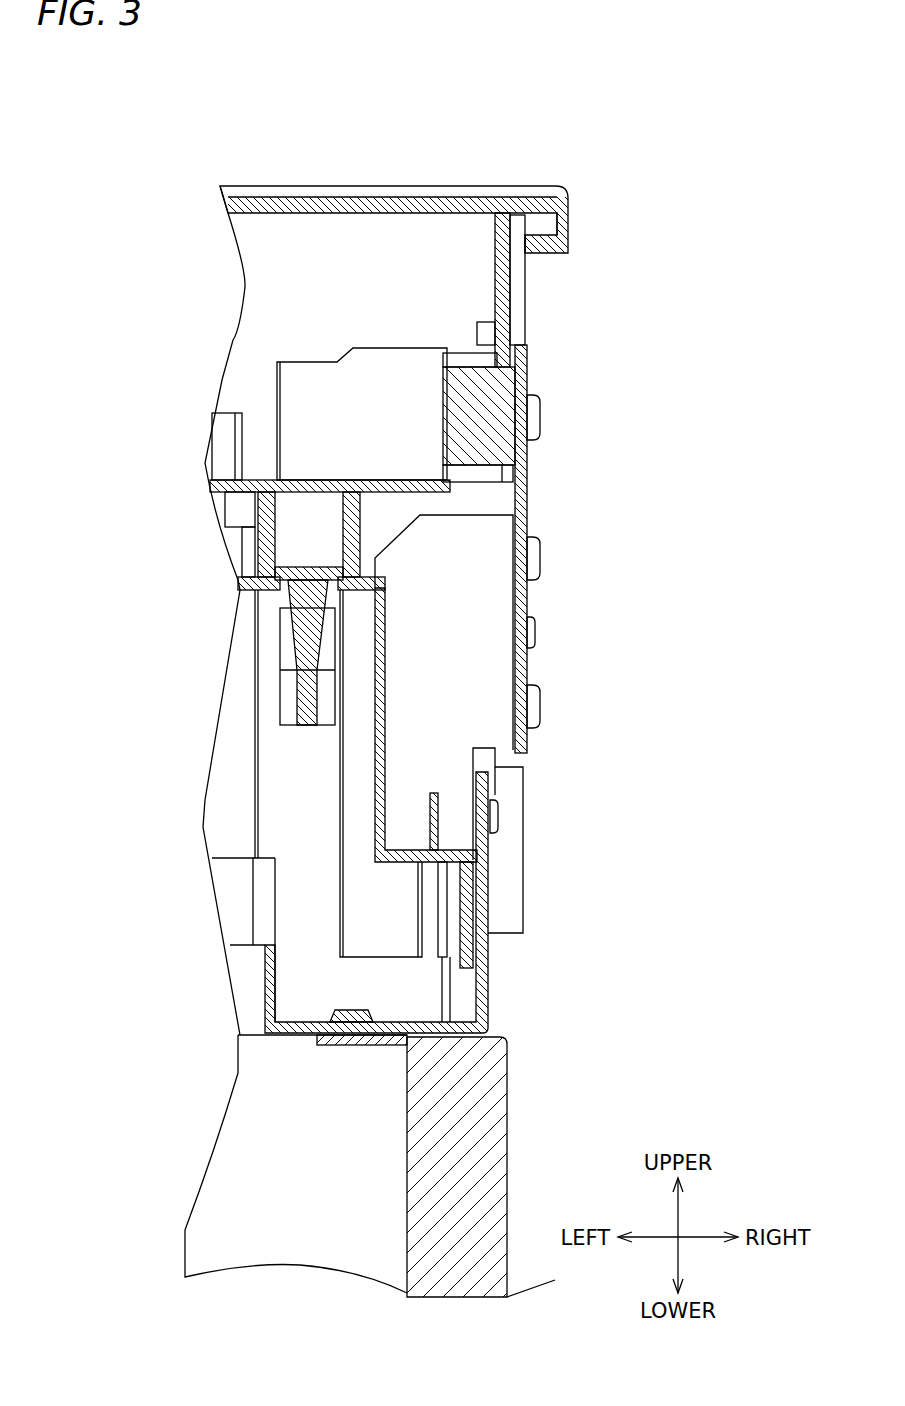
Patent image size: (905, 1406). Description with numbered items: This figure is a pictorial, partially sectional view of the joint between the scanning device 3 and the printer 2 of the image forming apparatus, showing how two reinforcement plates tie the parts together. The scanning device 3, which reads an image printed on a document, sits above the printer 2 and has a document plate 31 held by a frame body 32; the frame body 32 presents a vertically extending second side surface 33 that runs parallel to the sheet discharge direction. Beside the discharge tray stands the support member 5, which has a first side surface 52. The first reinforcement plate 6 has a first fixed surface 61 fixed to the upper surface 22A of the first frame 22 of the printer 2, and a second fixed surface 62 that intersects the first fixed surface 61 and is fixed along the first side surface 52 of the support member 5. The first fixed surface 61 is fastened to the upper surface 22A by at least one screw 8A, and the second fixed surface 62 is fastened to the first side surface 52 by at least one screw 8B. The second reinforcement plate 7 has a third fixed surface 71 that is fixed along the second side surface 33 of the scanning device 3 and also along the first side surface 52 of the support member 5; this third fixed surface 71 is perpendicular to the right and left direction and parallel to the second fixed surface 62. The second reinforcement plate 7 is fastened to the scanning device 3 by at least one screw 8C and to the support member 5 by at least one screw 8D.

The scanning device 3 is at (563, 176).
The document plate 31 is at (425, 203).
The frame body 32 is at (569, 192).
The second side surface 33 is at (521, 380).
The second reinforcement plate 7 is at (531, 490).
The third fixed surface 71 is at (512, 594).
The screw 8A is at (348, 1012).
The screw 8B is at (499, 812).
The screw 8C is at (541, 417).
The screw 8D is at (541, 547).
The support member 5 is at (390, 680).
The first side surface 52 is at (479, 880).
The first reinforcement plate 6 is at (489, 968).
The first fixed surface 61 is at (300, 1036).
The second fixed surface 62 is at (471, 913).
The printer 2 is at (439, 1166).
The first frame 22 is at (506, 1150).
The upper surface 22A is at (397, 1024).